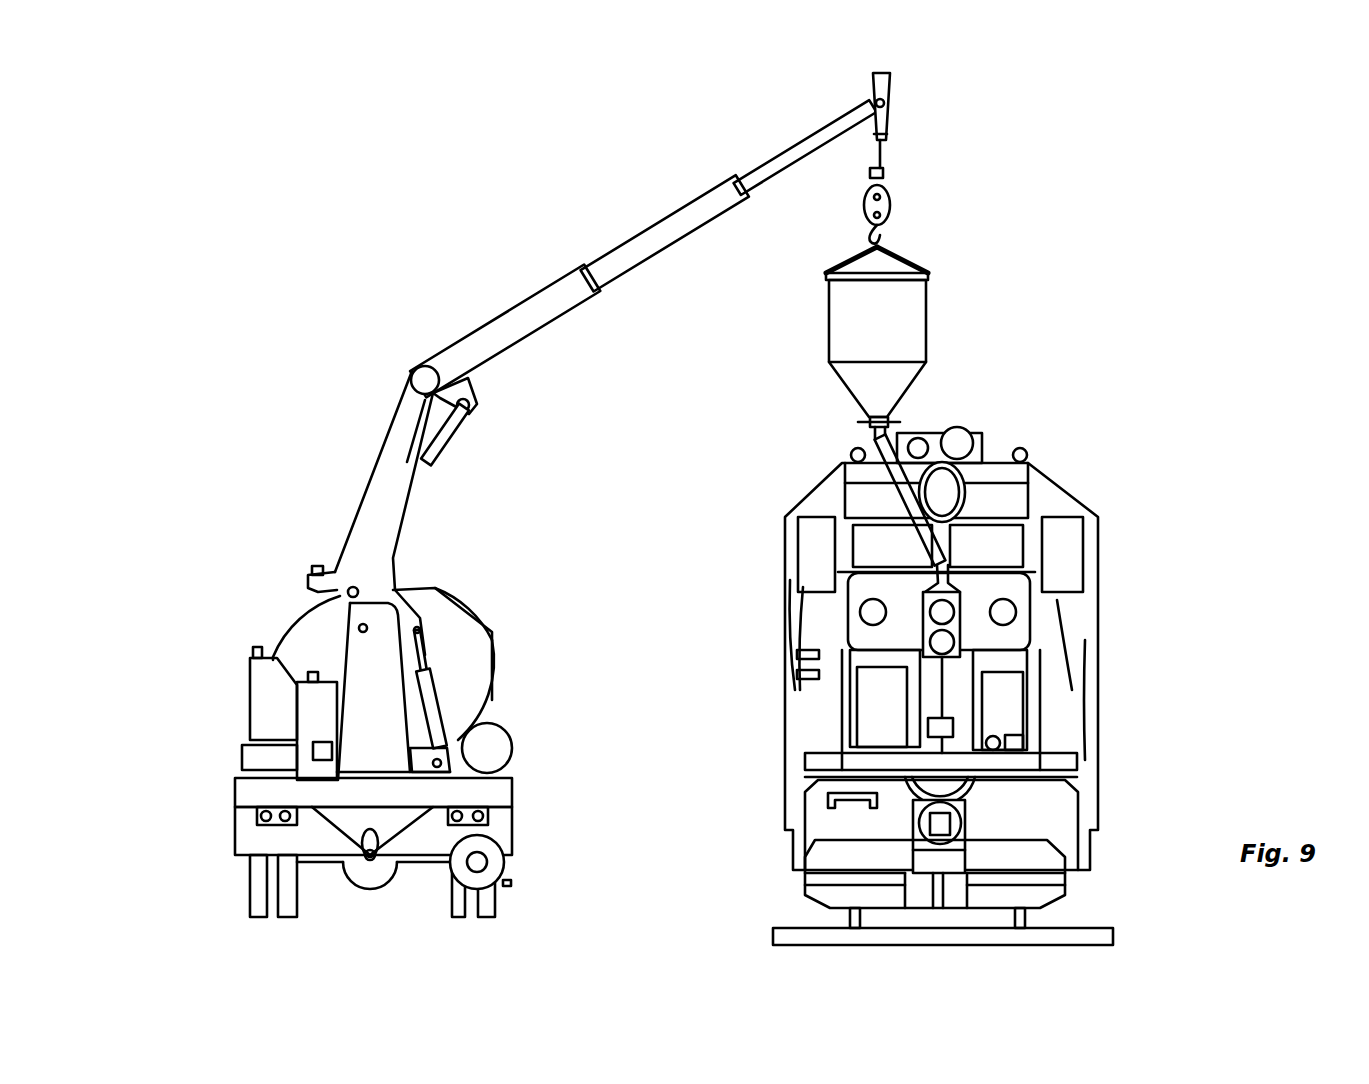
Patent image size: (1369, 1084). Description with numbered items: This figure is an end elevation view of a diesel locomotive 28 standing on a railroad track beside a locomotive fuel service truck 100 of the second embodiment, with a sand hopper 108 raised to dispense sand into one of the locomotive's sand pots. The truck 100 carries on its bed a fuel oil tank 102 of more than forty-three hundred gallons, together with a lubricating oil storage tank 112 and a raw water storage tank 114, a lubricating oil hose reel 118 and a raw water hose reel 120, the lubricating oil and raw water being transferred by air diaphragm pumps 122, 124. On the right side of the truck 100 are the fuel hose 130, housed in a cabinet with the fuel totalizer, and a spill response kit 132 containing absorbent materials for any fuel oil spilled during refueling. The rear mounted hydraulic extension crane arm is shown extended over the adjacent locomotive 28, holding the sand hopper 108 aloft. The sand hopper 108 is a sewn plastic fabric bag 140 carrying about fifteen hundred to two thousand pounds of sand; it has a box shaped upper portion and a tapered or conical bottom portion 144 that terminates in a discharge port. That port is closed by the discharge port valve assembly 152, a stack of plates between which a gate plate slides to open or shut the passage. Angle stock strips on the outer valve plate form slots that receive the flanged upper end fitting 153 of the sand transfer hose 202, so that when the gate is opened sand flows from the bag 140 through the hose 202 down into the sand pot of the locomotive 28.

The locomotive 28 is at (1100, 514).
The locomotive fuel service truck 100 is at (473, 542).
The fuel oil tank 102 is at (443, 623).
The sand hopper 108 is at (930, 278).
The lubricating oil storage tank 112 is at (322, 860).
The raw water storage tank 114 is at (422, 860).
The lubricating oil hose reel 118 is at (494, 850).
The raw water hose reel 120 is at (507, 883).
The air diaphragm pump 122 is at (248, 752).
The air diaphragm pump 124 is at (317, 726).
The fuel hose 130 is at (480, 328).
The spill response kit 132 is at (492, 750).
The plastic fabric bag 140 is at (930, 315).
The conical bottom portion 144 is at (905, 377).
The discharge port valve assembly 152 is at (858, 418).
The upper end fitting 153 is at (903, 418).
The sand transfer hose 202 is at (897, 490).